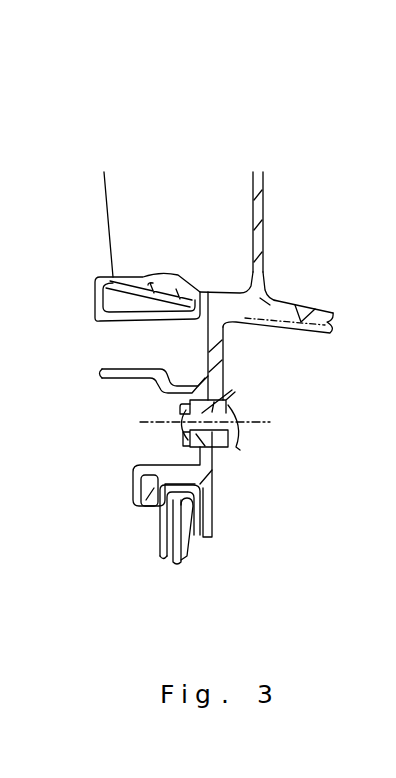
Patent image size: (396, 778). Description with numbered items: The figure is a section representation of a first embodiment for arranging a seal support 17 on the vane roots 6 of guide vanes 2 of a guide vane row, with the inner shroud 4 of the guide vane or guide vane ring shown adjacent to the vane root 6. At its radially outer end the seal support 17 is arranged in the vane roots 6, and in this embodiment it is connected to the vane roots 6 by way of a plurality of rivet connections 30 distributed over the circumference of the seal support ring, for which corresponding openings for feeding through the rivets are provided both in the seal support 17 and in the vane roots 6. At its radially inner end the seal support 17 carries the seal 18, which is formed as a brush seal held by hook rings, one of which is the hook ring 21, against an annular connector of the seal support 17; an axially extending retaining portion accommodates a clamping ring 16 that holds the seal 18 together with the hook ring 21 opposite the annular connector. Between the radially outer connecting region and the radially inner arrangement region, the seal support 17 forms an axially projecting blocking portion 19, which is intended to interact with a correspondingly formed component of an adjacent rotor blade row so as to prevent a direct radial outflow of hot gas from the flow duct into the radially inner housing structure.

The guide vane 2 is at (198, 183).
The inner shroud 4 is at (303, 318).
The vane root 6 is at (230, 343).
The clamping ring 16 is at (143, 493).
The seal support 17 is at (203, 476).
The seal 18 is at (185, 558).
The blocking portion 19 is at (135, 376).
The hook ring 21 is at (346, 614).
The rivet connection 30 is at (245, 421).